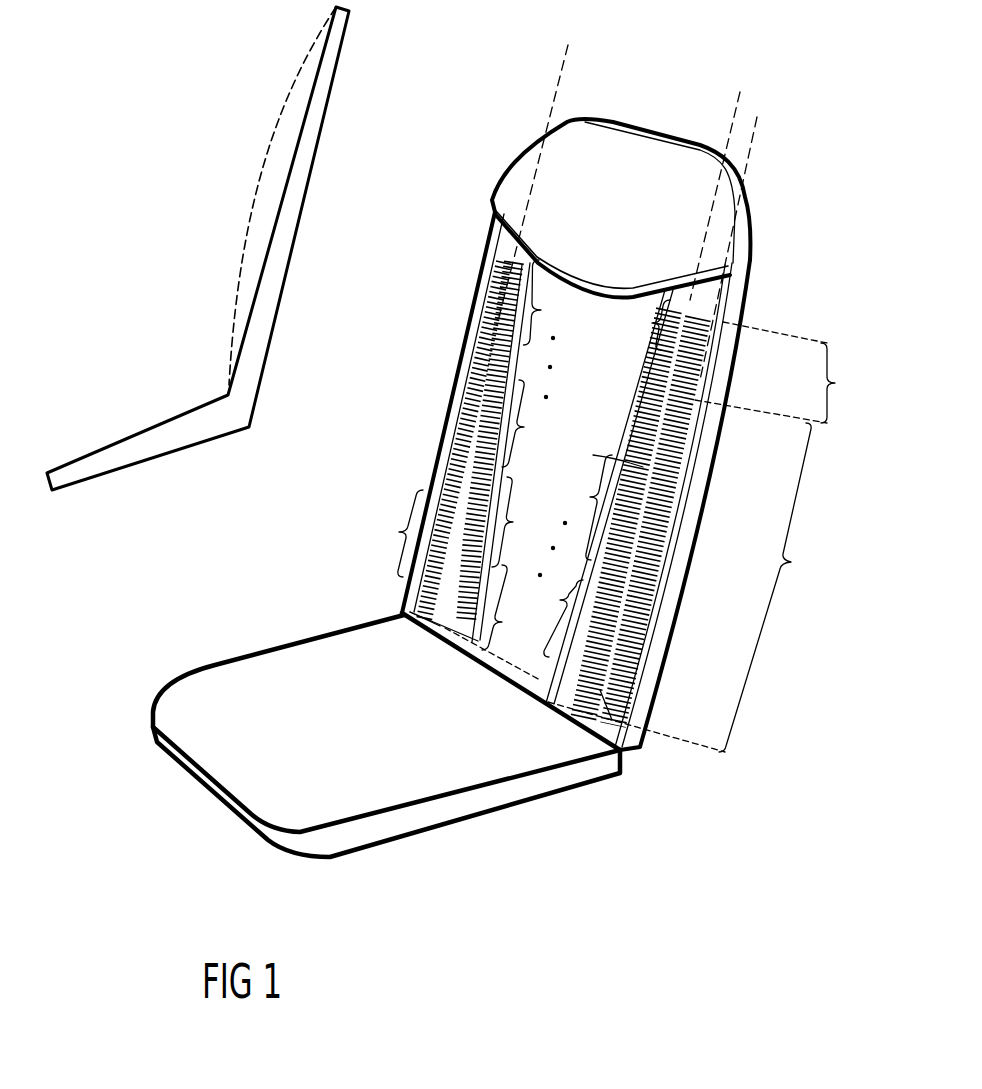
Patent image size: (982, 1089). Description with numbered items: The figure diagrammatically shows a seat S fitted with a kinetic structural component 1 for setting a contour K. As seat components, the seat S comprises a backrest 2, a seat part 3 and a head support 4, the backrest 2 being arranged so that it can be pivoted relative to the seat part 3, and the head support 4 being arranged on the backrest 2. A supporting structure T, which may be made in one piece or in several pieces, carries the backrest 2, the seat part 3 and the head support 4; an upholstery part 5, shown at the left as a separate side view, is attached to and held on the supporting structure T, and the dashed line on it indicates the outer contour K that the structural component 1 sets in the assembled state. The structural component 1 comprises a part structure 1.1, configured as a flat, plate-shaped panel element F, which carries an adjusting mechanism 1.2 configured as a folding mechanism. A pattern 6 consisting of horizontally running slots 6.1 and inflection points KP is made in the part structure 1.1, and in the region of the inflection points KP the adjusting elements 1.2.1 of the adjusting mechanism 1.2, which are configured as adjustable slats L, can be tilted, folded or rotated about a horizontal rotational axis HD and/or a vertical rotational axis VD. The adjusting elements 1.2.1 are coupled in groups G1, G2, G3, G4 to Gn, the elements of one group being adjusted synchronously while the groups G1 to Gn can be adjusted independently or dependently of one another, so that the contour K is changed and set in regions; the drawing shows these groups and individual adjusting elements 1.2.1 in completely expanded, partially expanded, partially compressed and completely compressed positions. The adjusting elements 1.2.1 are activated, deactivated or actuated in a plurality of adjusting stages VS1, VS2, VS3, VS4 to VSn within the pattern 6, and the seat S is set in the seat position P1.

The seat S is at (198, 248).
The contour K is at (285, 103).
The upholstery part 5 is at (268, 268).
The head support 4 is at (623, 147).
The backrest 2 is at (588, 297).
The seat part 3 is at (423, 800).
The supporting structure T is at (682, 158).
The horizontal rotational axis HD is at (455, 633).
The structural component 1 is at (503, 238).
The panel element F is at (723, 297).
The part structure 1.1 is at (477, 370).
The adjusting mechanism 1.2 is at (495, 295).
The adjusting element 1.2.1 is at (401, 603).
The pattern 6 is at (498, 287).
The slot 6.1 is at (455, 442).
The inflection point KP is at (513, 247).
The slat L is at (725, 340).
The vertical rotational axis VD is at (565, 63).
The group Gn is at (549, 329).
The group G4 is at (529, 423).
The group G1 is at (517, 522).
The group G2 is at (504, 607).
The group G3 is at (391, 533).
The adjusting stage VS3 is at (634, 325).
The adjusting stage VS4 is at (590, 516).
The adjusting stage VSn is at (545, 618).
The adjusting stage VS1 is at (788, 372).
The adjusting stage VS2 is at (779, 587).
The seat position P1 is at (618, 797).